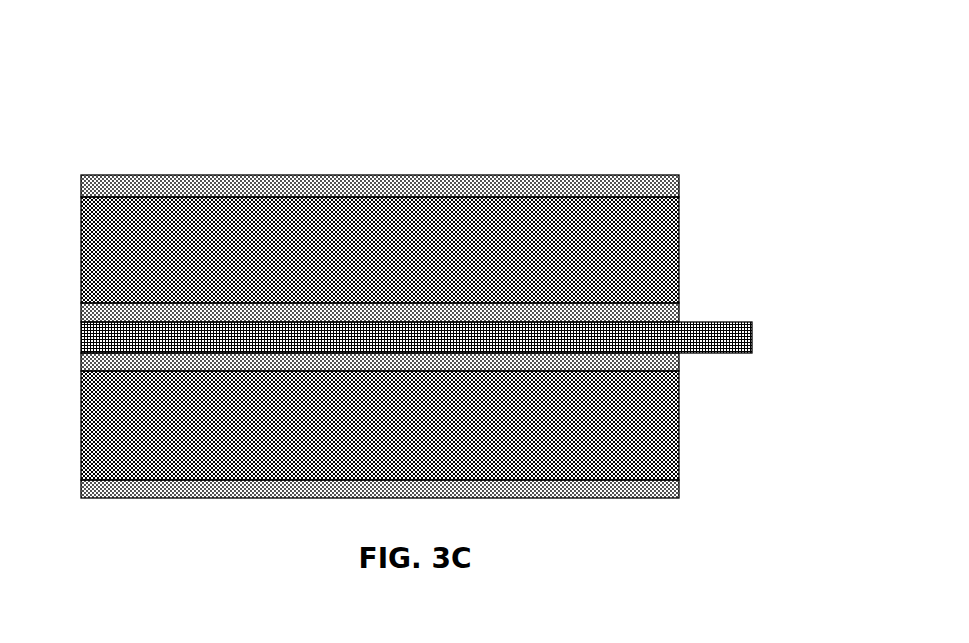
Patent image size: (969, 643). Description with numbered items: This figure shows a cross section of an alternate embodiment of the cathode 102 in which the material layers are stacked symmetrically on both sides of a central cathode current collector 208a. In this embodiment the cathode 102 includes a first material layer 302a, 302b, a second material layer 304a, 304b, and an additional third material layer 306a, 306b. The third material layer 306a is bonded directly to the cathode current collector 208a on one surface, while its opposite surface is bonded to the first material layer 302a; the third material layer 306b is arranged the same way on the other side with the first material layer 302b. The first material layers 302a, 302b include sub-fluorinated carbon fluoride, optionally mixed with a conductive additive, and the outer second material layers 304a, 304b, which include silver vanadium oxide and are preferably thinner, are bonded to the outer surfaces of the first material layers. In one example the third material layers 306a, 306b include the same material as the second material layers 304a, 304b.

The cathode 102 is at (398, 108).
The second material layer 304a is at (679, 181).
The first material layer 302a is at (679, 253).
The third material layer 306a is at (679, 307).
The cathode current collector 208a is at (752, 334).
The third material layer 306b is at (679, 360).
The first material layer 302b is at (679, 437).
The second material layer 304b is at (679, 490).